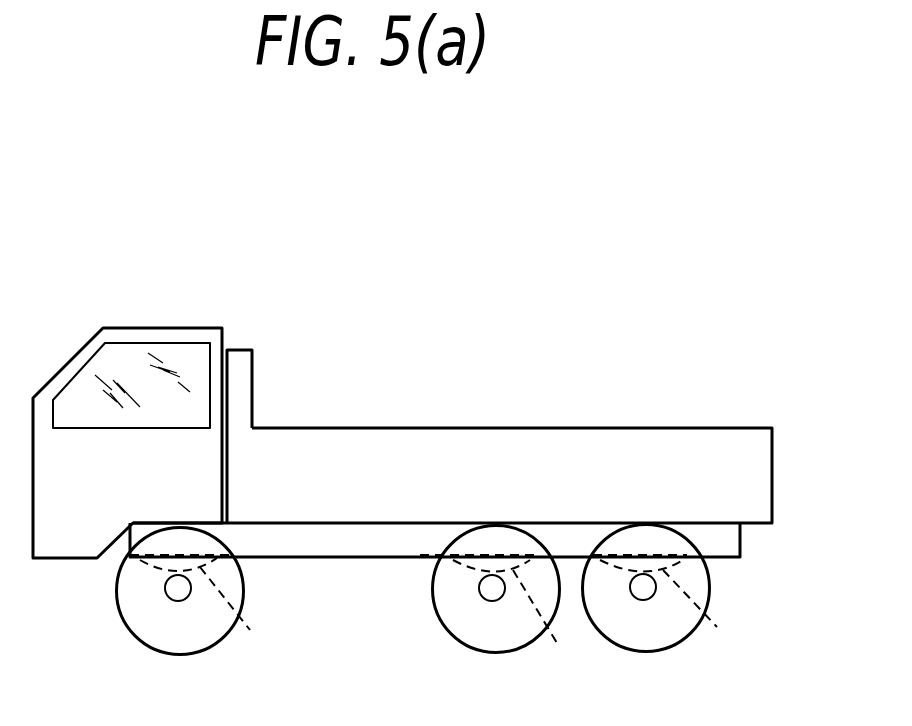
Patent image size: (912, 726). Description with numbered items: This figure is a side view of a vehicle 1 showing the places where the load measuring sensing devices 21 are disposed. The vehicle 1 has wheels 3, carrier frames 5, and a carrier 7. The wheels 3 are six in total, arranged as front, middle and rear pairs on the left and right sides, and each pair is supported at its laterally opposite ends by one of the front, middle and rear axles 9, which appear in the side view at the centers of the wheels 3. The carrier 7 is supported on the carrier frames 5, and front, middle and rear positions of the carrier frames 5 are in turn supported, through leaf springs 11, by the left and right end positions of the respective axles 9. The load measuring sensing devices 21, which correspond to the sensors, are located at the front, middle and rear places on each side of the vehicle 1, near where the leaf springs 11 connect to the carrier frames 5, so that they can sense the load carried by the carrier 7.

The vehicle 1 is at (327, 405).
The wheels 3 is at (138, 632).
The carrier frames 5 is at (370, 547).
The carrier 7 is at (602, 442).
The axles 9 is at (178, 598).
The leaf springs 11 is at (235, 615).
The load measuring sensing devices 21 is at (532, 557).